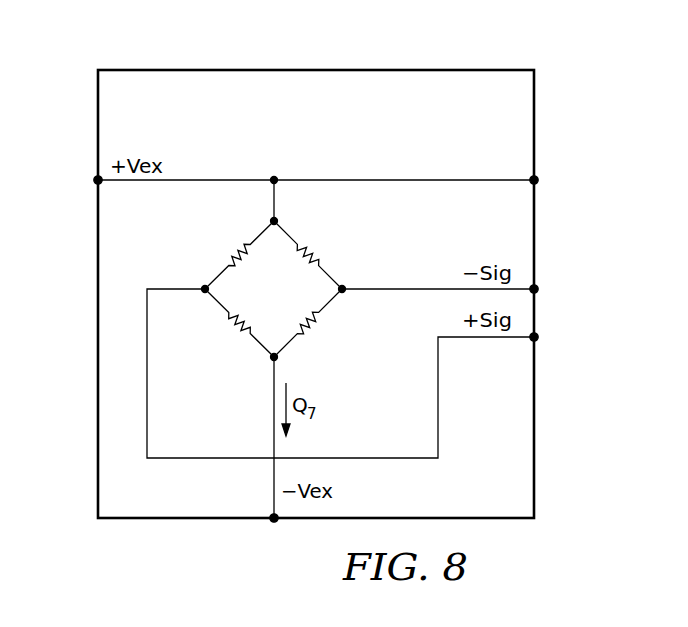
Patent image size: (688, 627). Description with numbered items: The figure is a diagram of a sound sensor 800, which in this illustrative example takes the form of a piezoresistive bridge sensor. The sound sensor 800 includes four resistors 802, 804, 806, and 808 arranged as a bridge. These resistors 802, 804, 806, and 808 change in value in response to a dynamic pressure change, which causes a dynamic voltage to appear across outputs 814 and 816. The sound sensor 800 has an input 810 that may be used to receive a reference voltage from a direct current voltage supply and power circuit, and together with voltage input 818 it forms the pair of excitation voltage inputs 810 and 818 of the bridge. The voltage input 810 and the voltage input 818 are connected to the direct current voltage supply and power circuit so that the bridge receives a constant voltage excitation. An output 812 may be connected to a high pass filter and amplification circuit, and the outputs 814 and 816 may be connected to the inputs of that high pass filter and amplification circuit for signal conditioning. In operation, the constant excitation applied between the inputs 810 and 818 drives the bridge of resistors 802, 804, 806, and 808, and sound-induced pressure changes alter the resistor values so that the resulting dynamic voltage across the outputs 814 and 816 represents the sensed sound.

The sound sensor 800 is at (374, 70).
The resistor 802 is at (238, 248).
The resistor 804 is at (313, 248).
The resistor 806 is at (235, 328).
The resistor 808 is at (313, 328).
The input 810 is at (92, 175).
The output 812 is at (541, 176).
The output 814 is at (541, 285).
The output 816 is at (541, 343).
The voltage input 818 is at (271, 525).